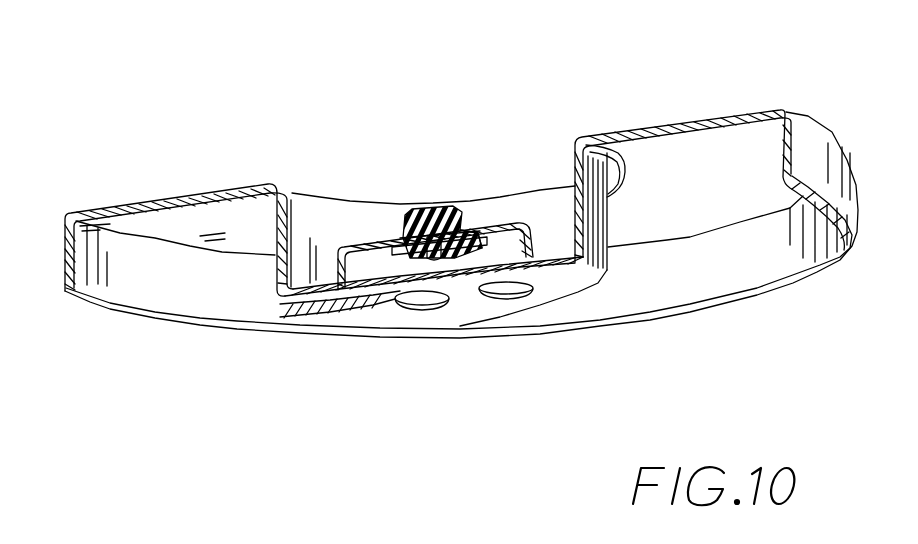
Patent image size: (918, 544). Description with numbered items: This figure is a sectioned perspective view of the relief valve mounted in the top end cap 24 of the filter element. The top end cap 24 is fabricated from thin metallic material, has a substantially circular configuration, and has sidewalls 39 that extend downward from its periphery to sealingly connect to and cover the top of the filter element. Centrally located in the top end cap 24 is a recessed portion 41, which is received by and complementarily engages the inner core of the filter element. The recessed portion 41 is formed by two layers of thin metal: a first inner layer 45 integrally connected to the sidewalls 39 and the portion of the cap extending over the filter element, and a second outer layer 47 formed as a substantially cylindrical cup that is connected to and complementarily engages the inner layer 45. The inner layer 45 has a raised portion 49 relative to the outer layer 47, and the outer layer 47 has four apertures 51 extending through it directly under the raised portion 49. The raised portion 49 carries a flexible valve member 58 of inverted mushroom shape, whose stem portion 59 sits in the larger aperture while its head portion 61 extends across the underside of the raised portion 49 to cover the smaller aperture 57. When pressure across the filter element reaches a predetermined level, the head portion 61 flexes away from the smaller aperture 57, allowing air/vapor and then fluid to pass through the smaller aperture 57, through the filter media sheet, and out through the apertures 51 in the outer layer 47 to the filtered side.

The top end cap 24 is at (682, 117).
The sidewalls 39 is at (807, 140).
The recessed portion 41 is at (549, 178).
The inner layer 45 is at (290, 214).
The outer layer 47 is at (603, 233).
The raised portion 49 is at (355, 246).
The apertures 51 is at (512, 295).
The smaller aperture 57 is at (471, 211).
The flexible valve member 58 is at (430, 206).
The stem portion 59 is at (457, 210).
The head portion 61 is at (424, 249).